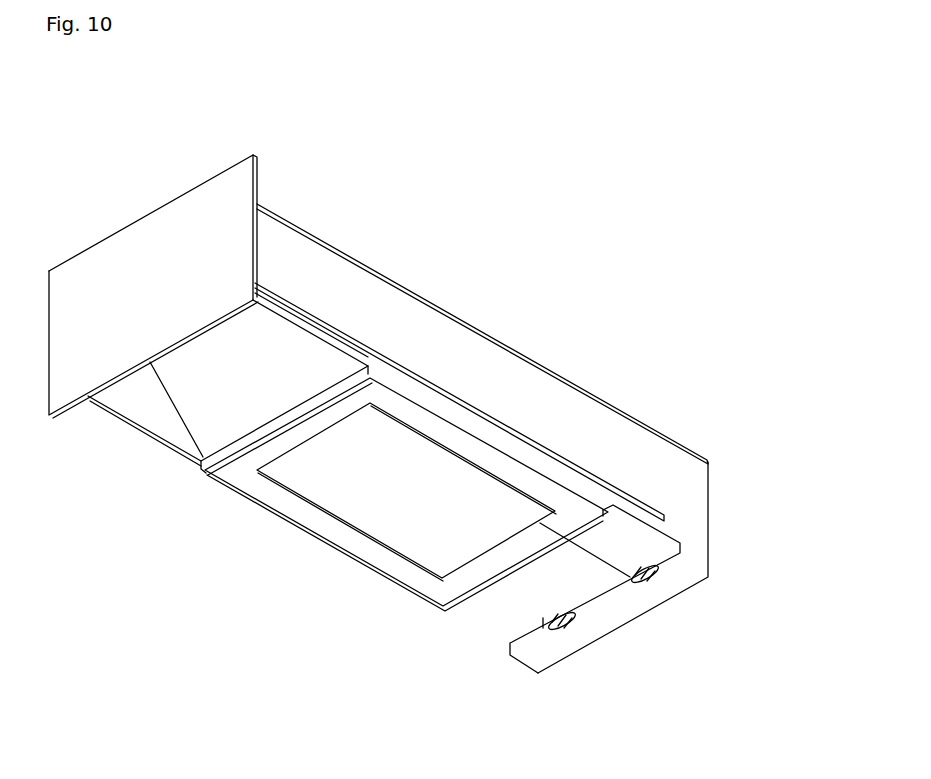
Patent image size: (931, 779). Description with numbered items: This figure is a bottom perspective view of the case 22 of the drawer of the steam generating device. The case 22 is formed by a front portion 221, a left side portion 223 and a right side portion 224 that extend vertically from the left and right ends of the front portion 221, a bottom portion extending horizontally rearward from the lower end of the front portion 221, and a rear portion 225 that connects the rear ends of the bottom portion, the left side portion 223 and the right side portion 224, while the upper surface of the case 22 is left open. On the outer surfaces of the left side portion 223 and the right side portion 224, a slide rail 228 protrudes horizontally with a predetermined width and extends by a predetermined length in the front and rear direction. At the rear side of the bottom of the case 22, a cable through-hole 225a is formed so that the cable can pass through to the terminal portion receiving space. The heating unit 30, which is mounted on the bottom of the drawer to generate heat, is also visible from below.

The case 22 is at (490, 198).
The front portion 221 is at (110, 250).
The left side portion 223 is at (137, 408).
The right side portion 224 is at (394, 300).
The rear portion 225 is at (710, 508).
The cable through-hole 225a is at (616, 587).
The slide rail 228 is at (548, 445).
The heating unit 30 is at (397, 545).